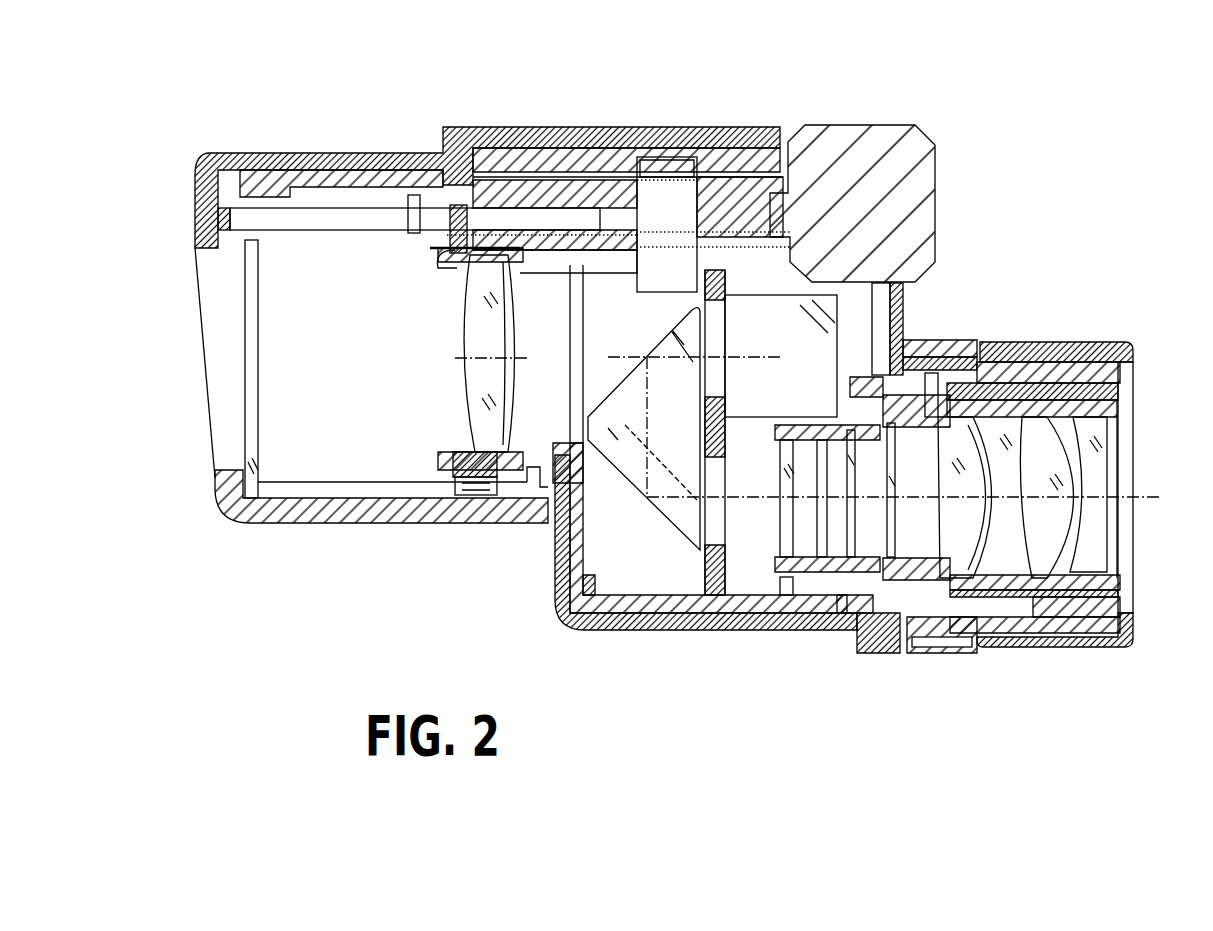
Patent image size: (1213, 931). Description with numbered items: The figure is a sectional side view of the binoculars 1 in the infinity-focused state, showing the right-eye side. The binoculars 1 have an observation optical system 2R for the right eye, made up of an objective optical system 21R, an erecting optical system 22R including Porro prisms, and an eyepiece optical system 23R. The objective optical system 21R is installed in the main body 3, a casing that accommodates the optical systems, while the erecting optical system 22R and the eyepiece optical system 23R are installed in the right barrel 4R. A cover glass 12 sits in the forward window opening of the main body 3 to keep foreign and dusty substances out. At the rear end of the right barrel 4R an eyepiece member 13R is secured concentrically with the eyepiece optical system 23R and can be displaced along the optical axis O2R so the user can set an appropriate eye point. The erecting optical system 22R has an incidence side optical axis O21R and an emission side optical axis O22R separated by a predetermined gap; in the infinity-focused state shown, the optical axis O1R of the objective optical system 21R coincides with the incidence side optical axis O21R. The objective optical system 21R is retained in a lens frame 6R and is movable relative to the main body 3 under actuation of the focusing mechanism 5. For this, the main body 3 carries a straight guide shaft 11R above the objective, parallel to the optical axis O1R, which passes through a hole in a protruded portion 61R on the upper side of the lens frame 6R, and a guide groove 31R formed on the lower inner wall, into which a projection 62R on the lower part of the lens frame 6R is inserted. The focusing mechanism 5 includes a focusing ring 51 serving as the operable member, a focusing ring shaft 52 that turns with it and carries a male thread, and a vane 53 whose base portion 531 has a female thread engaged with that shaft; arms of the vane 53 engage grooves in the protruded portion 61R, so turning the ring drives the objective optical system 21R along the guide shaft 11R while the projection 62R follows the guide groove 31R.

The binoculars 1 is at (583, 86).
The main body 3 is at (345, 151).
The focusing ring shaft 52 is at (510, 185).
The vane 53 is at (648, 152).
The base portion 531 is at (677, 167).
The focusing mechanism 5 is at (860, 122).
The focusing ring 51 is at (900, 213).
The guide shaft 11R is at (313, 223).
The protruded portion 61R is at (430, 233).
The cover glass 12 is at (250, 397).
The guide groove 31R is at (333, 482).
The optical axis of the objective optical system O1R is at (450, 358).
The objective optical system 21R is at (480, 402).
The projection 62R is at (460, 507).
The lens frame 6R is at (495, 507).
The incidence side optical axis O21R is at (620, 358).
The erecting optical system 22R is at (750, 383).
The emission side optical axis O22R is at (753, 498).
The right barrel 4R is at (627, 634).
The optical axis of the eyepiece O2R is at (1158, 493).
The observation optical system 2R is at (1124, 537).
The eyepiece optical system 23R is at (1000, 647).
The eyepiece member 13R is at (1100, 657).